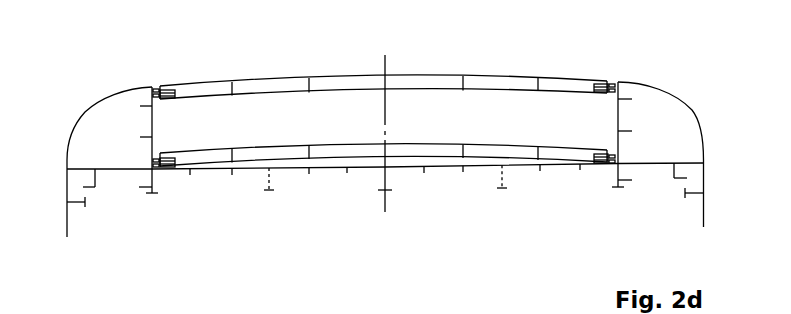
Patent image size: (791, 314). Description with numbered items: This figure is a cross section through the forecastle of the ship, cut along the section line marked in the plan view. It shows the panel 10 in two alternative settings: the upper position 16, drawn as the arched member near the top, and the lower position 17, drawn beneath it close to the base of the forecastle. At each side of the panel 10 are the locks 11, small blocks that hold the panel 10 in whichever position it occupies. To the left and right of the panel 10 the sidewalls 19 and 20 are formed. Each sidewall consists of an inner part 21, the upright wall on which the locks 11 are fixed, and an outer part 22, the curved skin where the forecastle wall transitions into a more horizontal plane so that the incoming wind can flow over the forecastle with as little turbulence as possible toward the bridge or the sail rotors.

The panel 10 is at (383, 57).
The locks 11 is at (157, 88).
The upper position 16 is at (341, 83).
The lower position 17 is at (427, 151).
The sidewall 19 is at (677, 133).
The sidewall 20 is at (85, 153).
The inner part 21 is at (147, 128).
The outer part 22 is at (97, 100).